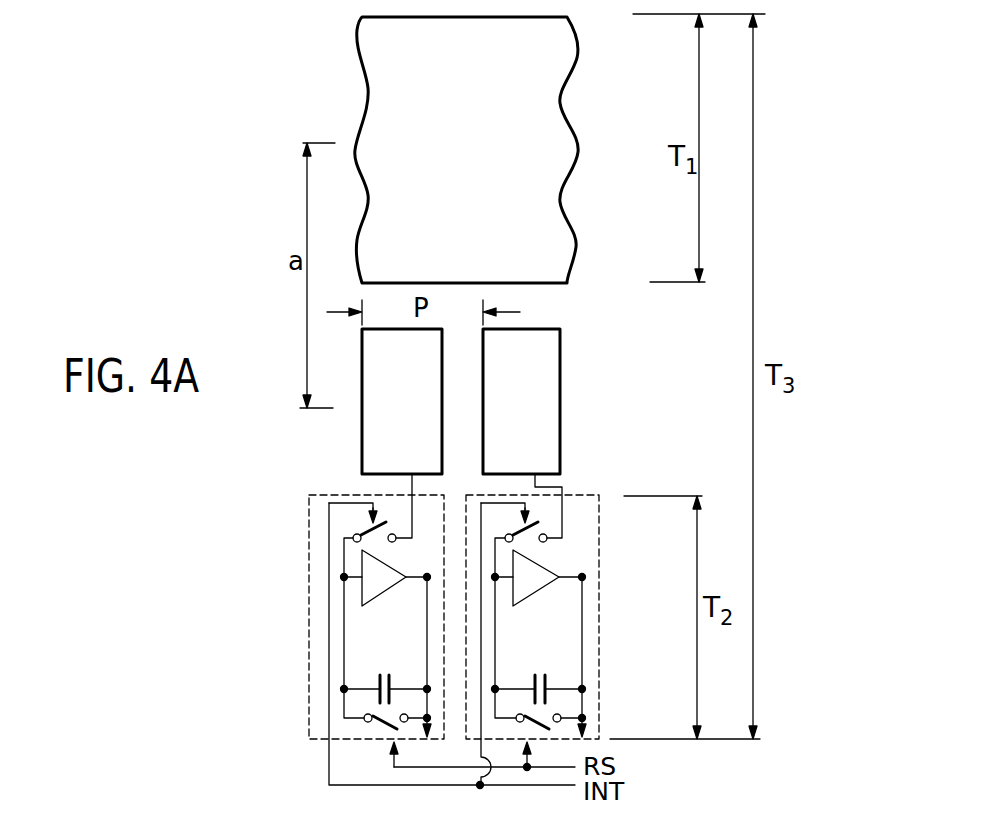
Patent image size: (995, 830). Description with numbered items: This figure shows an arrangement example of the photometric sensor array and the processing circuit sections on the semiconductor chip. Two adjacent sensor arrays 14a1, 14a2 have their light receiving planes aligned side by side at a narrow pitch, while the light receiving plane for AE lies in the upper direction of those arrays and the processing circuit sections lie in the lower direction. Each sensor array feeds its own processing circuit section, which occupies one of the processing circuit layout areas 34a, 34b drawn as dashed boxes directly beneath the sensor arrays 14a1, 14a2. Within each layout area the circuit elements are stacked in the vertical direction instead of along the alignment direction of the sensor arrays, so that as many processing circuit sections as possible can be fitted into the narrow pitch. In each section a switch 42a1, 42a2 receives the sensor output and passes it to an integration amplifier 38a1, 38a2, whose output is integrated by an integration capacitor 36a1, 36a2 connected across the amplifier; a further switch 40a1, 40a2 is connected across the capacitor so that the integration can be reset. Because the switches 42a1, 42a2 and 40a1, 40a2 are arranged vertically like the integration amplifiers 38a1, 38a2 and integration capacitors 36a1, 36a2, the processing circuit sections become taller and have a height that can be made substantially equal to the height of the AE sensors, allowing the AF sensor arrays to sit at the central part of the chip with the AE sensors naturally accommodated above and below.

The sensor array 14a1 is at (362, 447).
The sensor array 14a2 is at (560, 428).
The processing circuit layout area 34a is at (309, 608).
The processing circuit layout area 34b is at (600, 577).
The switch 42a1 is at (378, 541).
The switch 42a2 is at (532, 552).
The integration amplifier 38a1 is at (387, 583).
The integration amplifier 38a2 is at (537, 583).
The integration capacitor 36a1 is at (384, 673).
The integration capacitor 36a2 is at (540, 672).
The switch 40a1 is at (380, 729).
The switch 40a2 is at (548, 712).